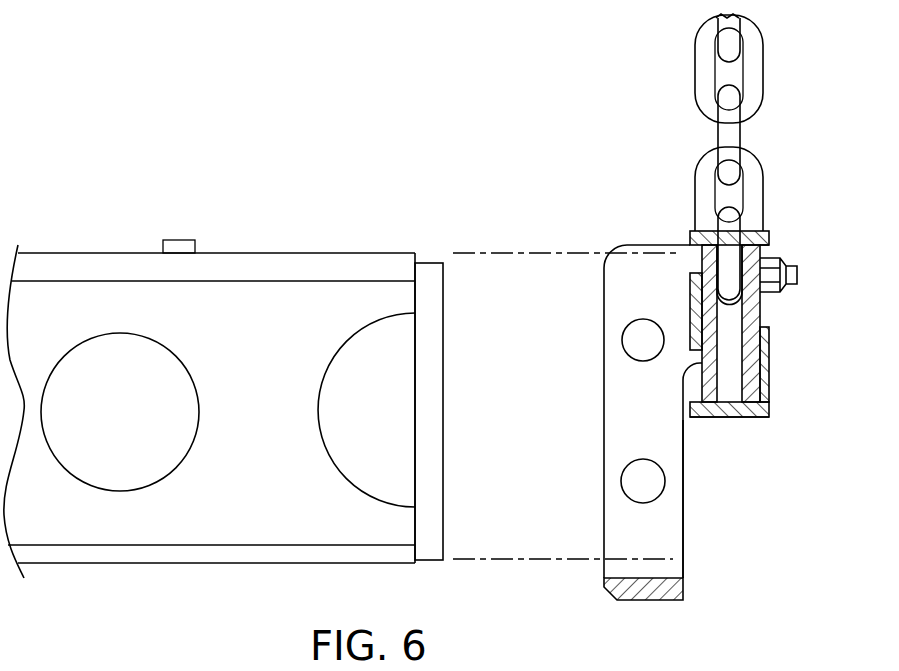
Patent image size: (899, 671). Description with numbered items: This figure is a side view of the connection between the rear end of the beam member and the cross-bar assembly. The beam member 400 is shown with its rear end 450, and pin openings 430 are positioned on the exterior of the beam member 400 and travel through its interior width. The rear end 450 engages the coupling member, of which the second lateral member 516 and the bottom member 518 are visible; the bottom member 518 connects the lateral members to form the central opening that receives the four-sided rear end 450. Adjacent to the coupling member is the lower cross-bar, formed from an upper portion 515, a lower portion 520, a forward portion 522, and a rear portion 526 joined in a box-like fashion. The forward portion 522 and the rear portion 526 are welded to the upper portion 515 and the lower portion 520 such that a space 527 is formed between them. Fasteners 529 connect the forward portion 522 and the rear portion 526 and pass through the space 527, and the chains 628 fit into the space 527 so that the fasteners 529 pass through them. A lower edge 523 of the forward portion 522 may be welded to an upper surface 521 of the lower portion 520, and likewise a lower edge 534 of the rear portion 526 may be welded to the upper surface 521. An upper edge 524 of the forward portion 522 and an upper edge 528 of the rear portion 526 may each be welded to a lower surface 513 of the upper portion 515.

The beam member 400 is at (114, 263).
The pin openings 430 is at (92, 350).
The rear end 450 is at (431, 272).
The chains 628 is at (703, 48).
The upper portion 515 is at (761, 230).
The lower surface 513 is at (727, 232).
The upper edge 524 is at (690, 252).
The upper edge 528 is at (763, 248).
The forward portion 522 is at (700, 291).
The space 527 is at (724, 317).
The rear portion 526 is at (752, 297).
The upper surface 521 is at (730, 399).
The lower edge 534 is at (751, 393).
The lower portion 520 is at (757, 409).
The fasteners 529 is at (786, 273).
The second lateral member 516 is at (607, 325).
The lower edge 523 is at (708, 388).
The bottom member 518 is at (680, 590).